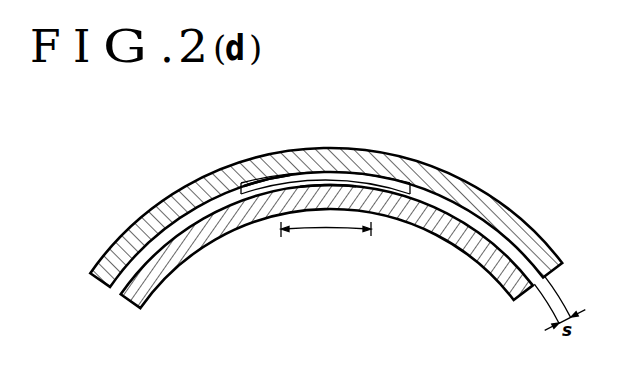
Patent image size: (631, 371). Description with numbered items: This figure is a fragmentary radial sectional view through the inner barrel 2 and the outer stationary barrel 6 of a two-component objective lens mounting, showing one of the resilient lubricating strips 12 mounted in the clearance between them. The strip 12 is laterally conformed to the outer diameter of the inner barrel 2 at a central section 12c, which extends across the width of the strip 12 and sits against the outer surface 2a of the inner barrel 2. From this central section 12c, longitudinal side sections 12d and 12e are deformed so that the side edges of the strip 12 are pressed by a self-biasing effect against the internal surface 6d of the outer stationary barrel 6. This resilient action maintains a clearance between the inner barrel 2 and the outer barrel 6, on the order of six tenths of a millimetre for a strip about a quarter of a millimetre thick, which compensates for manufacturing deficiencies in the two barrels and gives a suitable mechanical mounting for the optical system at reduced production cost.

The inner barrel 2 is at (462, 237).
The seat portion of inner ring 2a is at (324, 181).
The outer stationary barrel 6 is at (468, 197).
The internal surface of the outer stationary barrel 6d is at (278, 179).
The strip 12 is at (351, 181).
The central section 12c is at (326, 240).
The longitudinal side section 12d is at (242, 182).
The longitudinal side section 12e is at (403, 182).